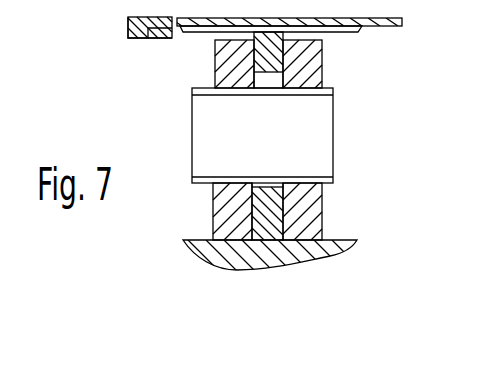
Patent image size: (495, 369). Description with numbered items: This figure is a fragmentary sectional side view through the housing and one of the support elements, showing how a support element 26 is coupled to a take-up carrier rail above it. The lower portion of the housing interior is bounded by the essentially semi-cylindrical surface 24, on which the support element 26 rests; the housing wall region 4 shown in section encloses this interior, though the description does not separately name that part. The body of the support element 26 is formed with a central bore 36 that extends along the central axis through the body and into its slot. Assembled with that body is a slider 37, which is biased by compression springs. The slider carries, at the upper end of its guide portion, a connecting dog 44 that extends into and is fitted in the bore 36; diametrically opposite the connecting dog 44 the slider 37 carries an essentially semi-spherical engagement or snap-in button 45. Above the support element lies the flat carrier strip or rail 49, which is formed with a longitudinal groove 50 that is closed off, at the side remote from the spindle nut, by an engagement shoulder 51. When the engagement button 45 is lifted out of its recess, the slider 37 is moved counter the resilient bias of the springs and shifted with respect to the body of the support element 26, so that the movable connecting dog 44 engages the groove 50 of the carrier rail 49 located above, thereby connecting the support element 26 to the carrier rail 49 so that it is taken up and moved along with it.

The housing body 4 is at (317, 122).
The semi-cylindrical surface 24 is at (347, 240).
The support element 26 is at (320, 208).
The central bore 36 is at (273, 83).
The slider 37 is at (262, 203).
The connecting dog 44 is at (277, 33).
The engagement button projection 45 is at (278, 236).
The carrier strip 49 is at (153, 13).
The groove 50 is at (160, 28).
The engagement shoulder 51 is at (128, 22).